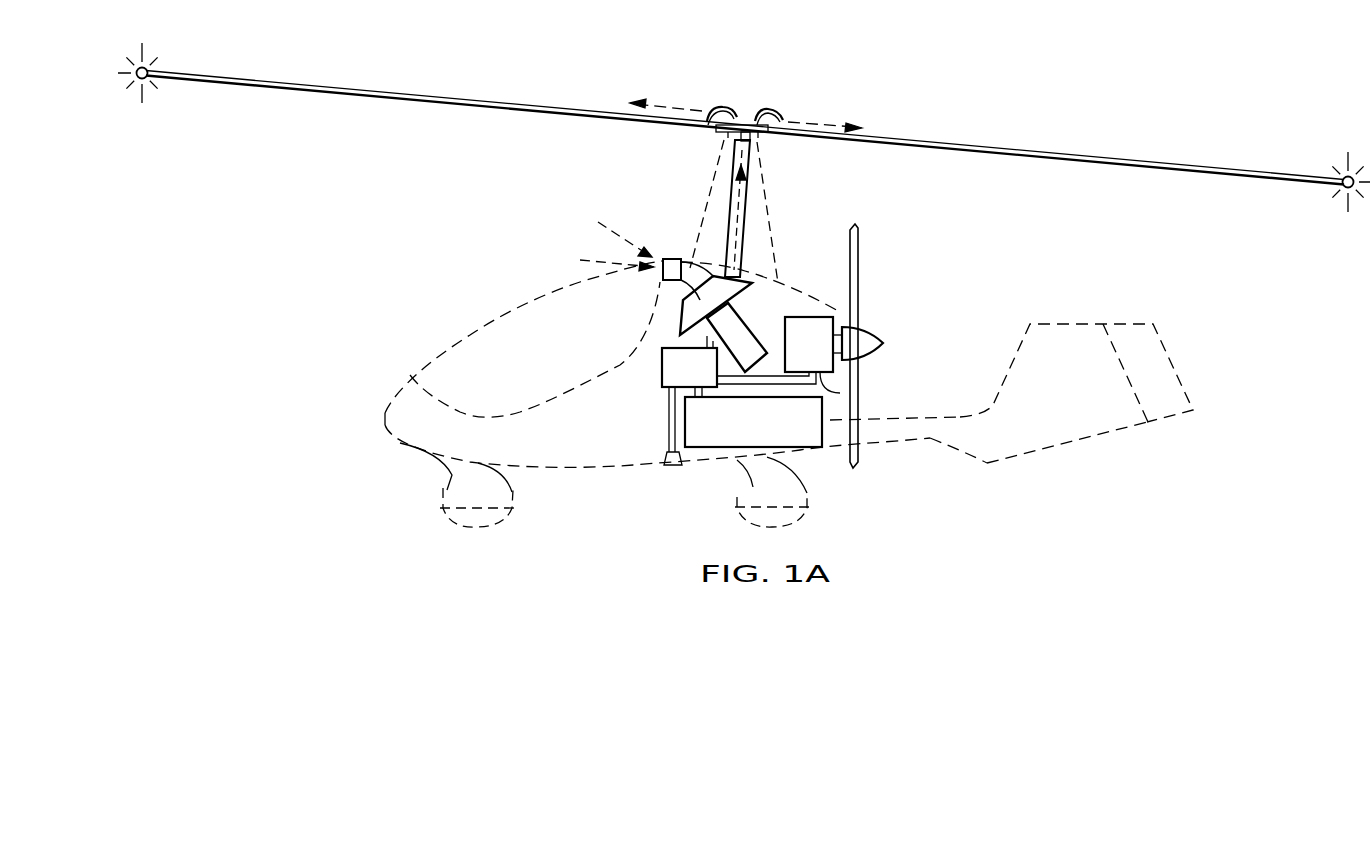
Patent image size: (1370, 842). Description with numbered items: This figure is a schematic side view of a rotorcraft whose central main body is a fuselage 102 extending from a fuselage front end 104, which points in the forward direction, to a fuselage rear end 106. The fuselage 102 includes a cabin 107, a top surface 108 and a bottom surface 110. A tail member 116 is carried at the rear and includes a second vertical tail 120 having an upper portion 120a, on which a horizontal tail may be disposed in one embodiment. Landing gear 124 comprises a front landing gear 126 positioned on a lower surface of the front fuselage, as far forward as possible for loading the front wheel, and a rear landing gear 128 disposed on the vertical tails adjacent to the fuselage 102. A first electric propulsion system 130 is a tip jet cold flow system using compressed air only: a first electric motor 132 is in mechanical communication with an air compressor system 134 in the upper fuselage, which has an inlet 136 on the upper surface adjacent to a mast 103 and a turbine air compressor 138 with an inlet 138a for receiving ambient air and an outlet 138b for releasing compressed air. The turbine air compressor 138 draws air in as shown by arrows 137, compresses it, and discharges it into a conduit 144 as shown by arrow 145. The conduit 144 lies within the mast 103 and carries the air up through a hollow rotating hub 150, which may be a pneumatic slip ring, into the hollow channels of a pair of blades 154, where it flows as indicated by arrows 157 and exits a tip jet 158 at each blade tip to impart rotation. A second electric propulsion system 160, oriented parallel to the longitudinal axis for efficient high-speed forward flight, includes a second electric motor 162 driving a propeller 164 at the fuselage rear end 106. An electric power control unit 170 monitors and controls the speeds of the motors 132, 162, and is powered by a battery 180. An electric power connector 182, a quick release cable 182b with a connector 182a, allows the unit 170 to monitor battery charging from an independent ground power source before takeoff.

The fuselage 102 is at (408, 385).
The mast 103 is at (768, 172).
The fuselage front end 104 is at (386, 423).
The fuselage rear end 106 is at (846, 371).
The cabin 107 is at (478, 323).
The top surface 108 is at (557, 287).
The bottom surface 110 is at (575, 468).
The tail member 116 is at (1071, 452).
The second vertical tail 120 is at (1045, 323).
The upper portion of second vertical tail 120a is at (1075, 323).
The landing gear 124 is at (465, 532).
The front landing gear 126 is at (442, 490).
The rear landing gear 128 is at (808, 495).
The first electric propulsion system 130 is at (712, 240).
The first electric motor 132 is at (752, 317).
The air compressor system 134 is at (670, 290).
The inlet 136 is at (690, 268).
The arrows 137 is at (598, 222).
The turbine air compressor 138 is at (668, 320).
The inlet of turbine air compressor 138a is at (672, 258).
The outlet of turbine air compressor 138b is at (806, 246).
The conduit 144 is at (733, 170).
The arrow 145 is at (768, 220).
The rotating hub 150 is at (746, 115).
The blades 154 is at (440, 94).
The arrows 157 is at (815, 120).
The tip jet 158 is at (148, 66).
The second electric propulsion system 160 is at (876, 330).
The second electric motor 162 is at (840, 394).
The propeller 164 is at (858, 266).
The electric power control unit 170 is at (662, 375).
The battery 180 is at (772, 434).
The electric power connector 182 is at (658, 455).
The connector 182a is at (676, 463).
The cable 182b is at (668, 440).